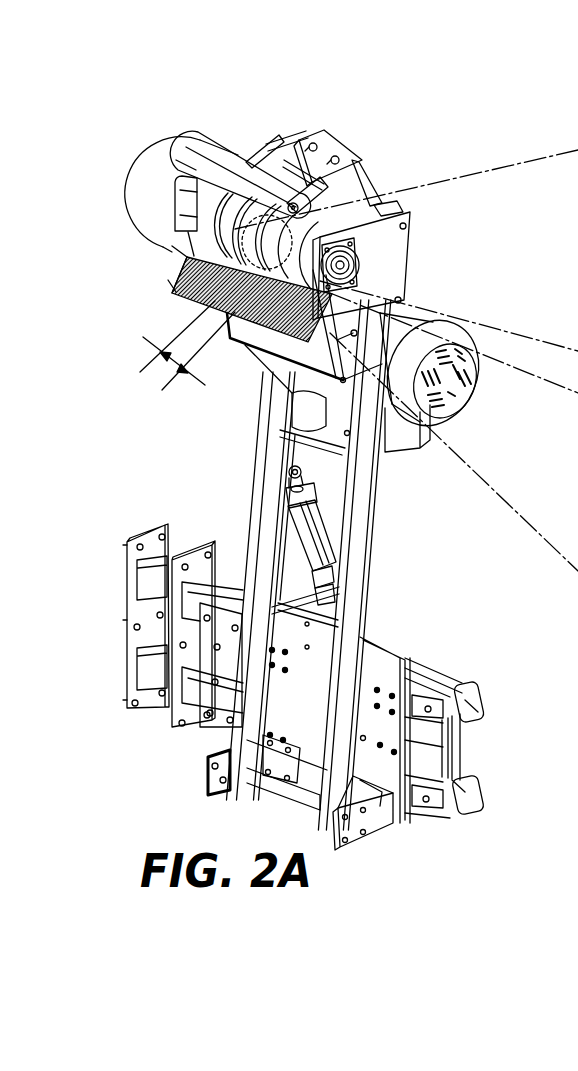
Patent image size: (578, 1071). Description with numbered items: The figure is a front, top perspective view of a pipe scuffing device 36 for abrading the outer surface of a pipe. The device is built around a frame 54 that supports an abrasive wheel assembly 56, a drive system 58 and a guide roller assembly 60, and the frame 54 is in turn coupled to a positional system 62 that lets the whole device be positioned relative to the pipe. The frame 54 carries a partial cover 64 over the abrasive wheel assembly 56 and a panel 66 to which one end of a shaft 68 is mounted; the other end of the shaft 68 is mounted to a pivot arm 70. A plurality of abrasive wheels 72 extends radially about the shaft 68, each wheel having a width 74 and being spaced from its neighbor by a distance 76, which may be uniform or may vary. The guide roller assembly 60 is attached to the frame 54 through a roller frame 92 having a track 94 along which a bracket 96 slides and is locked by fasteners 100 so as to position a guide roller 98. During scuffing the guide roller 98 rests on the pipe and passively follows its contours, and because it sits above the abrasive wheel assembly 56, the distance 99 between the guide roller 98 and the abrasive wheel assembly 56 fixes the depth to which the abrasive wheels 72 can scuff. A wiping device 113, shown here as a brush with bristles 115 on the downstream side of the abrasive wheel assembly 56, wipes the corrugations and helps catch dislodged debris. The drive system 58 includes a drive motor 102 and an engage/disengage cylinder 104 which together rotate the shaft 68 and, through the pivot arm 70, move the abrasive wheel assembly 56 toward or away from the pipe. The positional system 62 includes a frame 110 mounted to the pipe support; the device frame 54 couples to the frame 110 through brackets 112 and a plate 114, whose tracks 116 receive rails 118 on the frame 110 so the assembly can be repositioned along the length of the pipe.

The pipe scuffing device 36 is at (344, 107).
The frame 54 is at (375, 515).
The abrasive wheel assembly 56 is at (207, 297).
The drive system 58 is at (462, 315).
The guide roller assembly 60 is at (250, 130).
The positional system 62 is at (413, 833).
The partial cover 64 is at (372, 190).
The panel 66 is at (390, 252).
The shaft 68 is at (182, 205).
The pivot arm 70 is at (187, 257).
The abrasive wheels 72 is at (190, 236).
The width 74 is at (178, 363).
The distance 76 is at (168, 288).
The roller frame 92 is at (278, 130).
The track 94 is at (313, 137).
The bracket 96 is at (330, 142).
The guide roller 98 is at (188, 154).
The distance 99 is at (207, 191).
The fasteners 100 is at (356, 162).
The drive motor 102 is at (407, 320).
The engage/disengage cylinder 104 is at (317, 527).
The frame 110 is at (467, 687).
The brackets 112 is at (207, 770).
The wiping device 113 is at (172, 295).
The plate 114 is at (377, 657).
The bristles 115 is at (260, 315).
The tracks 116 is at (427, 707).
The rails 118 is at (453, 783).